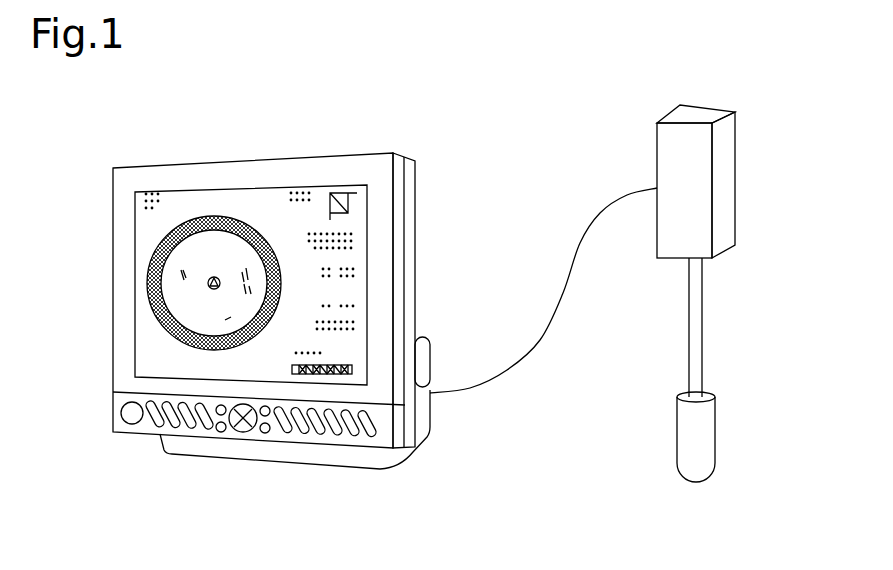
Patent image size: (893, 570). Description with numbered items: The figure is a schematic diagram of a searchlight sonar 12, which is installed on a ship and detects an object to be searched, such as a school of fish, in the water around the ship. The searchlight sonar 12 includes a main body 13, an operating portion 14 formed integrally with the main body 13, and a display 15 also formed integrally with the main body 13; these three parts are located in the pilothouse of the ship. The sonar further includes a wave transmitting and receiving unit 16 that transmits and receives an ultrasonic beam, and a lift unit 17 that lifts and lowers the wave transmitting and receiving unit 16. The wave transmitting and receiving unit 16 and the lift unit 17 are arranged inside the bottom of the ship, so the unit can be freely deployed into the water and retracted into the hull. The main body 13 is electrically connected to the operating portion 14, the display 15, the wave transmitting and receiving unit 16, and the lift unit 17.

The searchlight sonar 12 is at (534, 127).
The main body 13 is at (415, 245).
The operating portion 14 is at (241, 433).
The display 15 is at (135, 228).
The wave transmitting and receiving unit 16 is at (715, 437).
The lift unit 17 is at (735, 170).